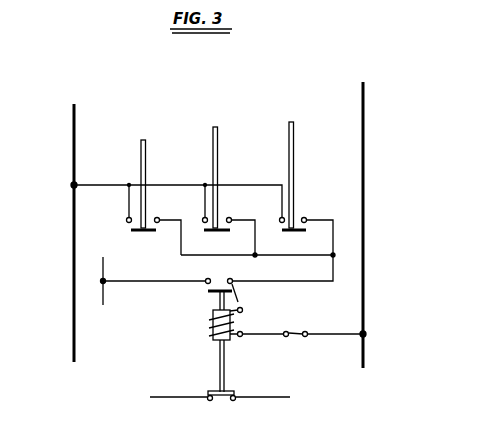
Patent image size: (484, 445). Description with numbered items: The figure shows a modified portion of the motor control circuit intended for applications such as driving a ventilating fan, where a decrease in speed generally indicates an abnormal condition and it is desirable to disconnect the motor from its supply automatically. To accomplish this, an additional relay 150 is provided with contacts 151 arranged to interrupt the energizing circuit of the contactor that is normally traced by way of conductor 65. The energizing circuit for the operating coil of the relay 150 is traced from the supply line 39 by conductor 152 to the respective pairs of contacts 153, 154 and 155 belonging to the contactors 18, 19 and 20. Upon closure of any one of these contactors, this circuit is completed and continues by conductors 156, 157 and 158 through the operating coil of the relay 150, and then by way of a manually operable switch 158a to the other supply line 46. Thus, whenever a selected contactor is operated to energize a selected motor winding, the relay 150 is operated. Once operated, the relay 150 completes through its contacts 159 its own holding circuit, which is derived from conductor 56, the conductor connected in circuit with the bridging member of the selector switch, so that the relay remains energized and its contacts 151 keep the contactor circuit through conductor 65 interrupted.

The contactor 18 is at (142, 136).
The contactor 19 is at (216, 125).
The contactor 20 is at (292, 120).
The supply line 39 is at (74, 268).
The supply line 46 is at (366, 304).
The conductor 56 is at (104, 272).
The conductor 65 is at (180, 397).
The additional relay 150 is at (219, 372).
The contacts 151 is at (222, 402).
The conductor 152 is at (178, 181).
The contacts 153 is at (163, 214).
The contacts 154 is at (232, 218).
The contacts 155 is at (306, 218).
The conductor 156 is at (226, 252).
The conductor 157 is at (333, 243).
The conductor 158 is at (244, 300).
The manually operable switch 158a is at (295, 330).
The contacts 159 is at (230, 278).